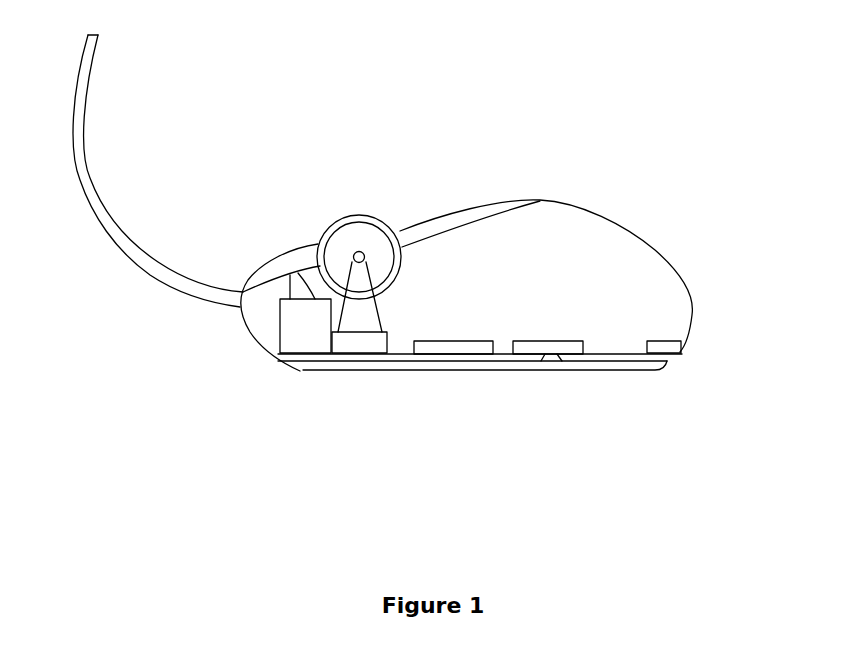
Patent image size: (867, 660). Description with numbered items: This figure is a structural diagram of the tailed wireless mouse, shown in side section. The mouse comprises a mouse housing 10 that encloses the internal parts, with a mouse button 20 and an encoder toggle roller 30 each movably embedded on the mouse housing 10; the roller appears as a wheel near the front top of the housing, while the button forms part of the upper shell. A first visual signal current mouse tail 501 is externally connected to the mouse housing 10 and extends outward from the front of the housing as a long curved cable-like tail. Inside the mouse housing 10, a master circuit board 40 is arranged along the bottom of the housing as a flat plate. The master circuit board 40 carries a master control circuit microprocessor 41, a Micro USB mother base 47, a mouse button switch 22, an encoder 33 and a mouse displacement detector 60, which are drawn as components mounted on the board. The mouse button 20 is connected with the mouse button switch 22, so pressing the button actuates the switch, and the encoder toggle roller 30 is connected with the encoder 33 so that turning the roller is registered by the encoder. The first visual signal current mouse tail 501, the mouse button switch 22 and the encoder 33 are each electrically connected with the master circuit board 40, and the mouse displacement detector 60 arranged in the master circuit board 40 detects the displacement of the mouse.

The mouse housing 10 is at (645, 243).
The mouse button 20 is at (288, 263).
The mouse button switch 22 is at (299, 329).
The encoder toggle roller 30 is at (370, 232).
The encoder 33 is at (355, 345).
The master circuit board 40 is at (487, 358).
The master control circuit microprocessor 41 is at (452, 341).
The Micro USB mother base 47 is at (660, 350).
The mouse displacement detector 60 is at (536, 350).
The first visual signal current mouse tail 501 is at (92, 172).